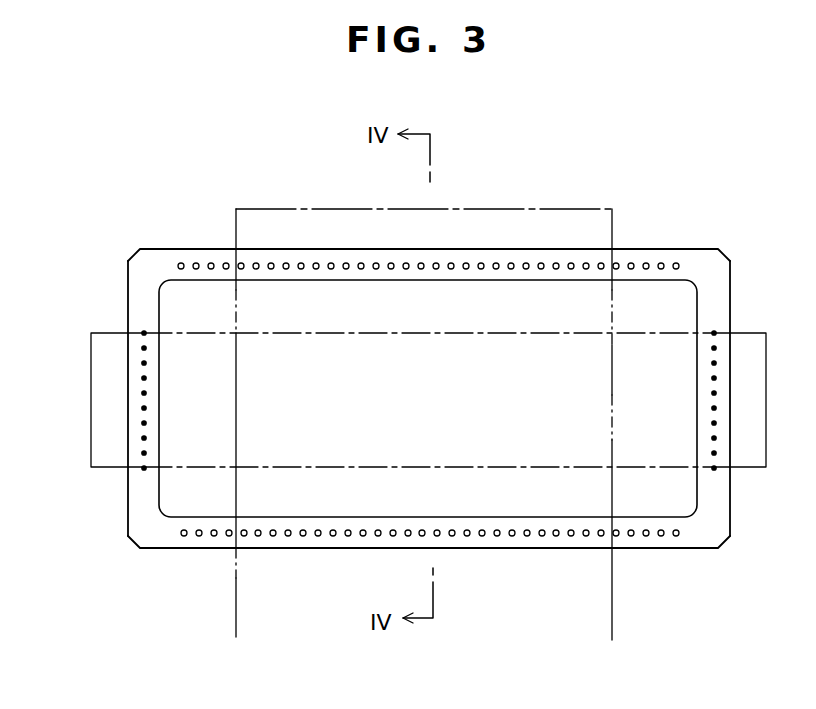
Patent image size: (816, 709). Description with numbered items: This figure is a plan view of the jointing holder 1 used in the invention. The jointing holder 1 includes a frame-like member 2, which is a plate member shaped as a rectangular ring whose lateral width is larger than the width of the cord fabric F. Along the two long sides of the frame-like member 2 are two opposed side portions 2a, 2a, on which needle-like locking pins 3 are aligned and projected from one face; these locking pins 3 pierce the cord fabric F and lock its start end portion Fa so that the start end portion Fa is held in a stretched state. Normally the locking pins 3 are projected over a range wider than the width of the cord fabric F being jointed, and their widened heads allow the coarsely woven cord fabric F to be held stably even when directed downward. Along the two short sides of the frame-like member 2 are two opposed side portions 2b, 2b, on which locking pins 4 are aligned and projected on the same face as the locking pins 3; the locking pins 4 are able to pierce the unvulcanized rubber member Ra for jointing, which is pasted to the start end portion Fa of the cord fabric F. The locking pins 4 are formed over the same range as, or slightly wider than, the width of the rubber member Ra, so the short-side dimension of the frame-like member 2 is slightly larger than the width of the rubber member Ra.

The jointing holder 1 is at (643, 137).
The frame-like member 2 is at (427, 397).
The side portions 2a is at (180, 252).
The side portions 2b is at (136, 303).
The locking pins 3 is at (301, 263).
The locking pin 4 is at (142, 422).
The cord fabric F is at (614, 588).
The start end portion Fa is at (248, 420).
The rubber member Ra is at (751, 458).